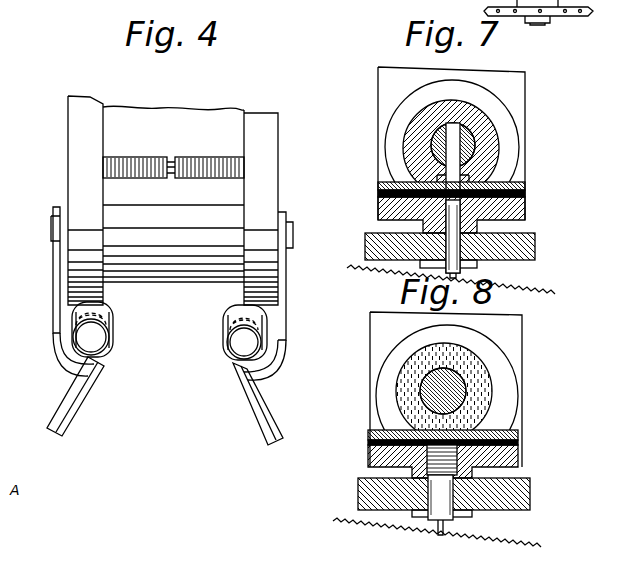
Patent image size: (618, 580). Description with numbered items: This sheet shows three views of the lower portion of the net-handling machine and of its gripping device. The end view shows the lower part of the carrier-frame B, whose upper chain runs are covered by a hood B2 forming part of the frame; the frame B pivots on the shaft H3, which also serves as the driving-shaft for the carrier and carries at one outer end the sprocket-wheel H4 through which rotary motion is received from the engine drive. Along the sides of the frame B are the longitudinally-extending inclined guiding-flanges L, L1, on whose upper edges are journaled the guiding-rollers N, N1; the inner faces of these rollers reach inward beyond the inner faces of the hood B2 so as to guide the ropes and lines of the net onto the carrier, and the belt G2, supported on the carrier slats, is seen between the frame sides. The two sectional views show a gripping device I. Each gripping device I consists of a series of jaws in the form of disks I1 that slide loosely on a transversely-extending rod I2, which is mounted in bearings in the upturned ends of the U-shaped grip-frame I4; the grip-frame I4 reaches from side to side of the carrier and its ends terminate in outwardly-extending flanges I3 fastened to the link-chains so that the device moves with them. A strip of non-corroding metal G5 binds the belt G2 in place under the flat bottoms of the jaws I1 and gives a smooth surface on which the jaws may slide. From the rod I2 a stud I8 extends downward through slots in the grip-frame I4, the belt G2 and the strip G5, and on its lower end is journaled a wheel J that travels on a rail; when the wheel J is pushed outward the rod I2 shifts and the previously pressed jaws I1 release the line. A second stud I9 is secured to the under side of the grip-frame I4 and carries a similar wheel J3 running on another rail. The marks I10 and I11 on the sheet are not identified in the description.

In FIG. 4, the carrier-frame B is at (85, 200).
In FIG. 7, the carrier-frame B is at (353, 35).
In FIG. 4, the hood B2 is at (261, 207).
In FIG. 4, the gripping device I is at (205, 156).
In FIG. 8, the gripping device I is at (327, 333).
In FIG. 4, the jaws I1 is at (148, 152).
In FIG. 7, the jaws I1 is at (413, 102).
In FIG. 8, the jaws I1 is at (413, 350).
In FIG. 4, the transversely-extending rod I2 is at (297, 280).
In FIG. 7, the transversely-extending rod I2 is at (470, 150).
In FIG. 8, the transversely-extending rod I2 is at (449, 395).
In FIG. 7, the outwardly-extending flanges I3 is at (522, 90).
In FIG. 8, the outwardly-extending flanges I3 is at (446, 389).
In FIG. 7, the grip-frame I4 is at (526, 215).
In FIG. 8, the grip-frame I4 is at (368, 452).
In FIG. 7, the stud I8 is at (453, 200).
In FIG. 8, the stud I9 is at (440, 505).
In FIG. 8, the spindle tip I10 is at (426, 520).
In FIG. 7, the ground line I11 is at (447, 279).
In FIG. 8, the ground line I11 is at (352, 516).
In FIG. 4, the belt G2 is at (187, 270).
In FIG. 7, the belt G2 is at (527, 198).
In FIG. 8, the belt G2 is at (518, 447).
In FIG. 7, the strip of non-corroding metal G5 is at (521, 183).
In FIG. 8, the strip of non-corroding metal G5 is at (520, 437).
In FIG. 7, the wheel J is at (536, 251).
In FIG. 8, the wheel J3 is at (358, 490).
In FIG. 4, the guiding-roller N is at (113, 335).
In FIG. 4, the guiding-roller N1 is at (228, 347).
In FIG. 4, the guiding-flange L is at (80, 404).
In FIG. 4, the guiding-flange L1 is at (250, 426).
In FIG. 7, the shaft H3 is at (510, 21).
In FIG. 7, the sprocket-wheel H4 is at (571, 17).